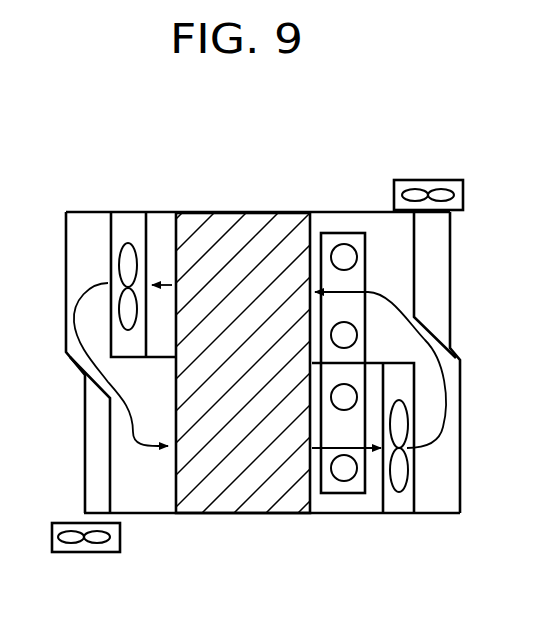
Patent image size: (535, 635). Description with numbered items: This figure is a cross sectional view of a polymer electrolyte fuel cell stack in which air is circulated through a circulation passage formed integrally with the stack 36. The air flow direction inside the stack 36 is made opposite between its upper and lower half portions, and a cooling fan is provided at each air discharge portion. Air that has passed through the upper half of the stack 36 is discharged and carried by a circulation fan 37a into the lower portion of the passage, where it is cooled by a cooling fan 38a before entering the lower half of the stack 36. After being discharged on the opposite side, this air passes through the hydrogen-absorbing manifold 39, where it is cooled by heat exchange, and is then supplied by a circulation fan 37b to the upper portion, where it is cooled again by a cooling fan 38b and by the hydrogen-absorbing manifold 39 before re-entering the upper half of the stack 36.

The stack 36 is at (235, 230).
The circulation fan 37a is at (128, 230).
The circulation fan 37b is at (397, 497).
The cooling fan 38a is at (84, 546).
The cooling fan 38b is at (427, 179).
The hydrogen-absorbing manifold 39 is at (342, 253).